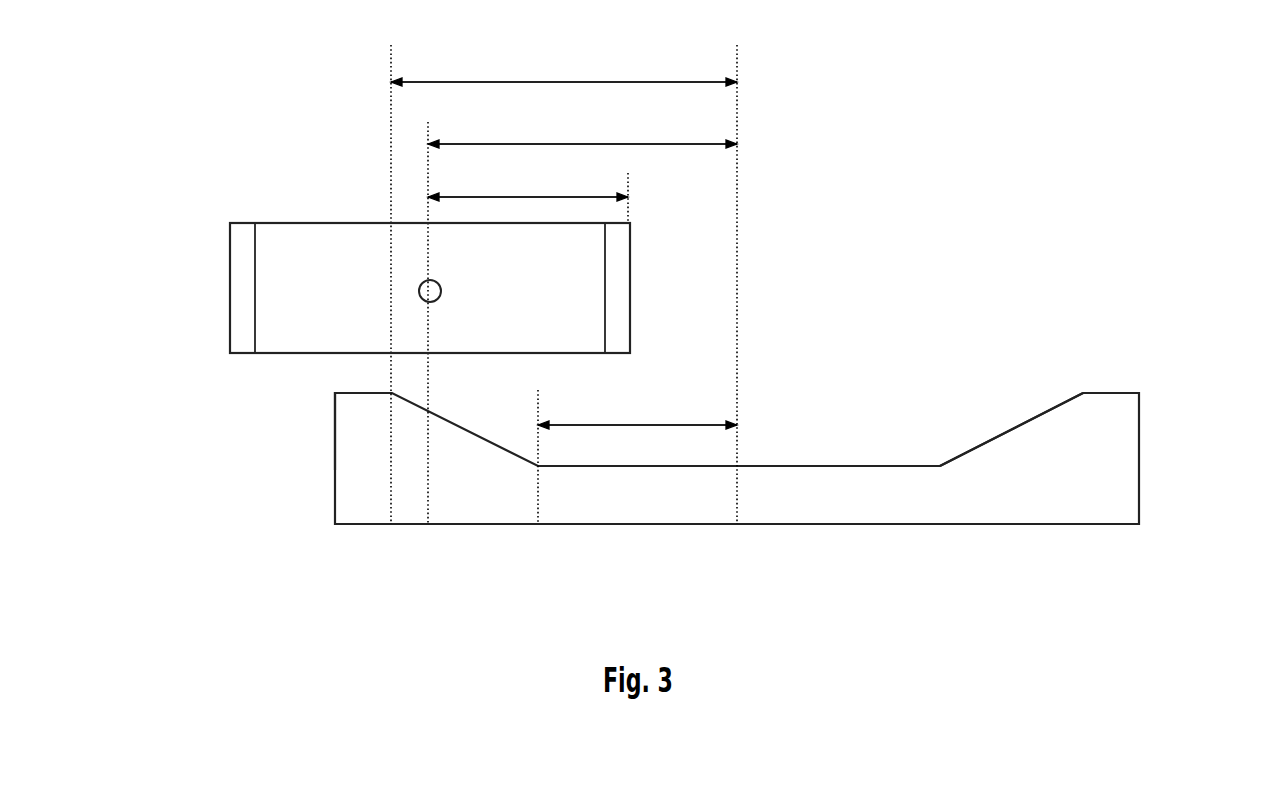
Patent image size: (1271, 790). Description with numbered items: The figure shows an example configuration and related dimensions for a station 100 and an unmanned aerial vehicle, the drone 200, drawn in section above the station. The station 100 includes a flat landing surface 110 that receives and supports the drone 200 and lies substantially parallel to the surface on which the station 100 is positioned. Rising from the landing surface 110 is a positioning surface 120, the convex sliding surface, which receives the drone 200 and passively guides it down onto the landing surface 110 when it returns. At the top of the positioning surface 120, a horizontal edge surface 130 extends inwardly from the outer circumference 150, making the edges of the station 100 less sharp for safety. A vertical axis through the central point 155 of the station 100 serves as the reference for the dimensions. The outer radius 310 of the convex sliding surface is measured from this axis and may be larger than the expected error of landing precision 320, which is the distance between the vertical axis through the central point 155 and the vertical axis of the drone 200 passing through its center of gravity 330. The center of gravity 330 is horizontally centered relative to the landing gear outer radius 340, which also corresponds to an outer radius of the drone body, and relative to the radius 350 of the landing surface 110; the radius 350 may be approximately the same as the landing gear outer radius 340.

The station 100 is at (1150, 435).
The landing surface 110 is at (855, 465).
The positioning surface 120 is at (1016, 427).
The edge surface 130 is at (1114, 393).
The outer circumference 150 is at (335, 470).
The central point 155 is at (737, 350).
The drone 200 is at (222, 247).
The center of gravity 330 is at (415, 292).
The outer radius 310 is at (564, 65).
The expected error of landing precision 320 is at (582, 126).
The landing gear outer radius 340 is at (528, 183).
The radius of the landing surface 350 is at (637, 411).